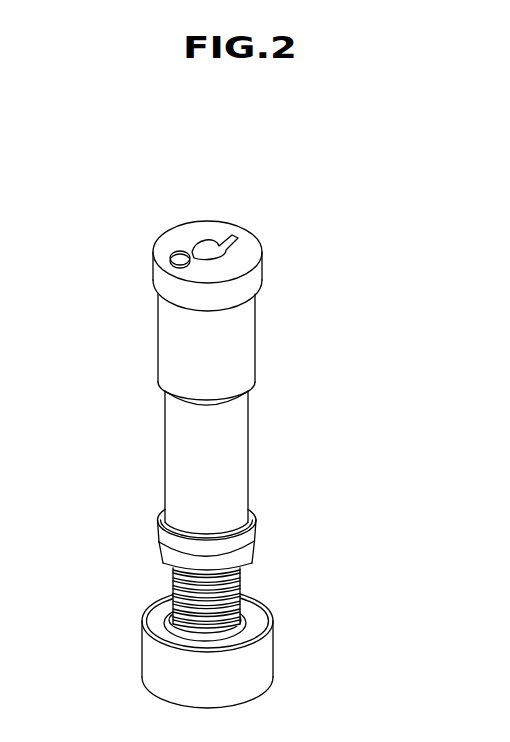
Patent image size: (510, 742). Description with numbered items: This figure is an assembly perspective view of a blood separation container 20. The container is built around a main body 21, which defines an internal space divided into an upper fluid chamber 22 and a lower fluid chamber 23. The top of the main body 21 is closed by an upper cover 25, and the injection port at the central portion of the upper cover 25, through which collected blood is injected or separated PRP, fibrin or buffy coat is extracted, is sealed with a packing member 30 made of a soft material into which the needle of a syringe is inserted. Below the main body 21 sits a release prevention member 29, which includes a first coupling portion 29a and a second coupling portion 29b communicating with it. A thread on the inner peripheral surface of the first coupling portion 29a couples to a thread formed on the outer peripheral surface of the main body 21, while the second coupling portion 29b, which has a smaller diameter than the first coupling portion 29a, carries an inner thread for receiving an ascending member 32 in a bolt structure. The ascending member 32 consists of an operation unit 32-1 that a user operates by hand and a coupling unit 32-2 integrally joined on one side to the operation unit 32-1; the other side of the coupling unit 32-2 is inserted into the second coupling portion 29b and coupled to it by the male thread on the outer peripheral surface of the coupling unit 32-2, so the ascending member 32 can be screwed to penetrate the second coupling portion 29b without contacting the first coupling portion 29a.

The blood separation container 20 is at (96, 202).
The main body 21 is at (258, 408).
The upper fluid chamber 22 is at (252, 367).
The lower fluid chamber 23 is at (244, 428).
The upper cover 25 is at (258, 277).
The packing member 30 is at (219, 236).
The release prevention member 29 is at (261, 541).
The first coupling portion 29a is at (246, 535).
The second coupling portion 29b is at (246, 559).
The ascending member 32 is at (354, 577).
The operation unit 32-1 is at (265, 657).
The coupling unit 32-2 is at (252, 590).